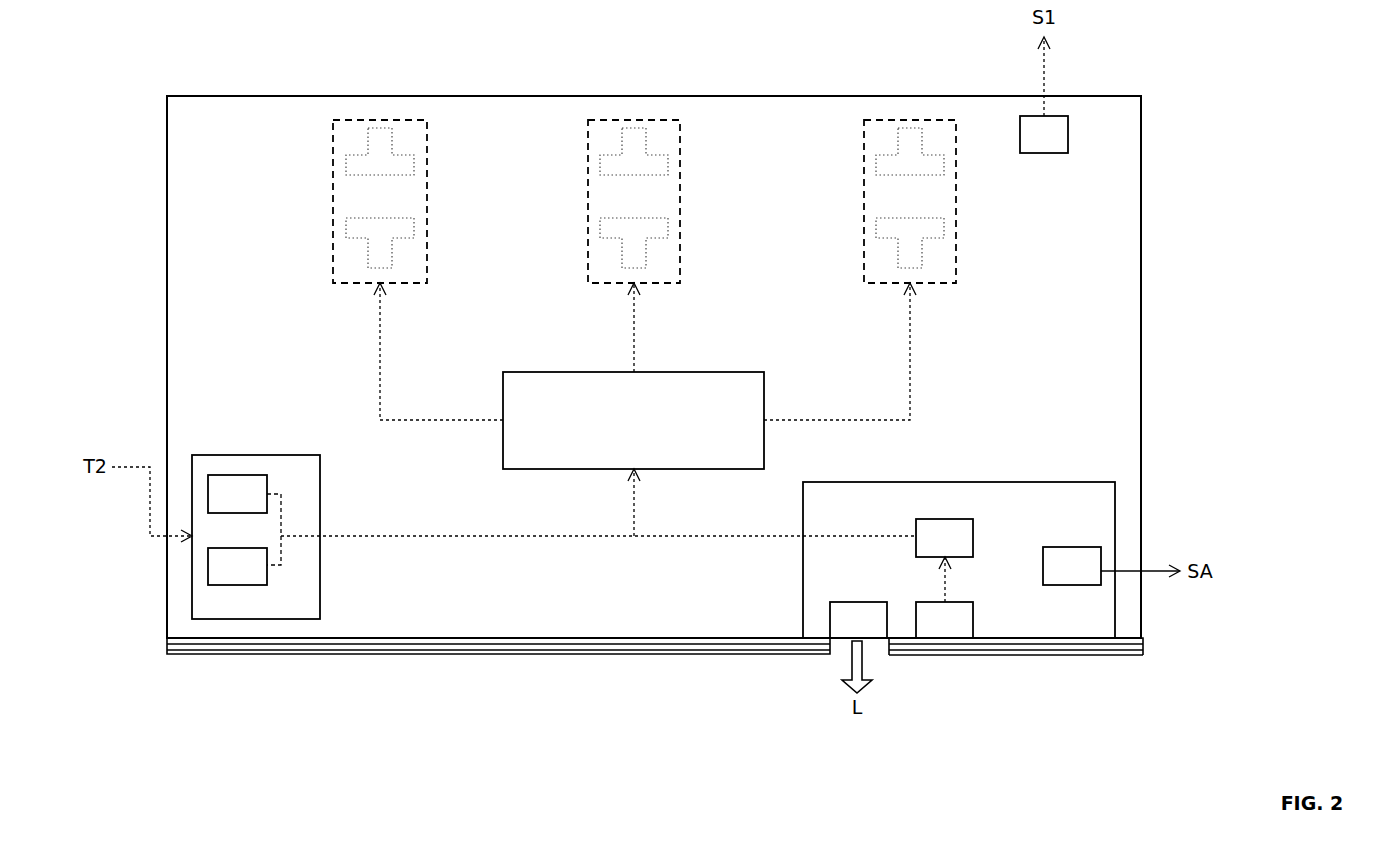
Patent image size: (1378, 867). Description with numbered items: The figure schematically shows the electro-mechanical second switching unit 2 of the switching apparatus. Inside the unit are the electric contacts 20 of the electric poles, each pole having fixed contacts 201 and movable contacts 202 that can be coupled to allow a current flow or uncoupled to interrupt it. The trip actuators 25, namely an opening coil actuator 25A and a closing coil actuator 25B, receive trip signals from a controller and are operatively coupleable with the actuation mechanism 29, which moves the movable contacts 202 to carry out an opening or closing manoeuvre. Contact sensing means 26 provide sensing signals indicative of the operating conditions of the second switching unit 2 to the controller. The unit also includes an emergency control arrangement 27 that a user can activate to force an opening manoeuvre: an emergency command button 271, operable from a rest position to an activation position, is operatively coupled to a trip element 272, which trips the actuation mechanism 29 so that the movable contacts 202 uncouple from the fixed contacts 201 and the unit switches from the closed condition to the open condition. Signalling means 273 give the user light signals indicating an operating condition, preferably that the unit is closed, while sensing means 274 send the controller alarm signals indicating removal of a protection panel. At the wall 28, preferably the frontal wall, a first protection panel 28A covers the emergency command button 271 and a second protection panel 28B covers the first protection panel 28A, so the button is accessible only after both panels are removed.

The second switching unit 2 is at (1222, 238).
The electric contacts 20 is at (333, 190).
The fixed contacts 201 is at (635, 148).
The movable contacts 202 is at (880, 230).
The trip actuators 25 is at (256, 509).
The opening coil actuator 25A is at (237, 494).
The closing coil actuator 25B is at (237, 566).
The contact sensing means 26 is at (1044, 134).
The emergency control arrangement 27 is at (959, 531).
The emergency command button 271 is at (944, 620).
The trip element 272 is at (944, 538).
The signalling means 273 is at (858, 620).
The sensing means 274 is at (1072, 566).
The wall 28 is at (527, 664).
The first protection panel 28A is at (1143, 645).
The second protection panel 28B is at (1048, 656).
The actuation mechanism 29 is at (762, 383).